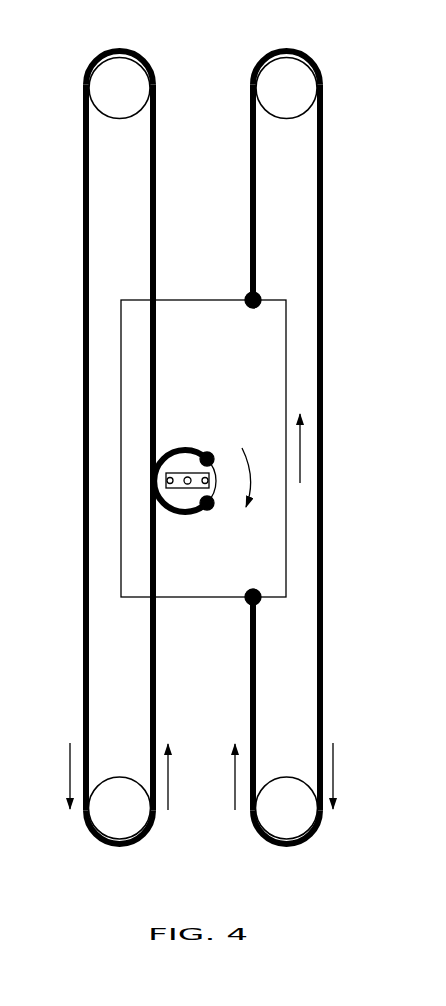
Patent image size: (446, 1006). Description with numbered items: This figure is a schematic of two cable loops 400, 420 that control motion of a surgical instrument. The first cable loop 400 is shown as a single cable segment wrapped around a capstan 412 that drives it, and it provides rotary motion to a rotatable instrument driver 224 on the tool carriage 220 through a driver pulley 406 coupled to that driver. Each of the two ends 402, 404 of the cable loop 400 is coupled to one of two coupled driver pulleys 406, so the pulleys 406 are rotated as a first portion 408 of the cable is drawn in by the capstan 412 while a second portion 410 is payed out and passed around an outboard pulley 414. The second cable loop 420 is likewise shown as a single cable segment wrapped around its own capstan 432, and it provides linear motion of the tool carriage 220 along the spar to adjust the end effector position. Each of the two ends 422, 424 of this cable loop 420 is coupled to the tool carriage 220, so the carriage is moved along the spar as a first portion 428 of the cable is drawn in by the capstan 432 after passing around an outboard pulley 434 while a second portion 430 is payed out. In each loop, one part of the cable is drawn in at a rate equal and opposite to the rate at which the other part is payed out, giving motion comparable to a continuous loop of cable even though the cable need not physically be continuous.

The cable loop 400 is at (72, 399).
The first portion of the cable 408 is at (157, 639).
The second portion of the cable 410 is at (83, 605).
The capstan 412 is at (105, 820).
The outboard pulley 414 is at (103, 77).
The cable loop 420 is at (335, 399).
The end of the cable loop 422 is at (258, 297).
The end of the cable loop 424 is at (258, 600).
The first portion of the cable 428 is at (323, 627).
The second portion of the cable 430 is at (250, 678).
The capstan 432 is at (270, 820).
The outboard pulley 434 is at (270, 77).
The tool carriage 220 is at (168, 300).
The instrument driver 224 is at (175, 470).
The end of the cable loop 402 is at (211, 452).
The end of the cable loop 404 is at (211, 509).
The driver pulley 406 is at (184, 511).